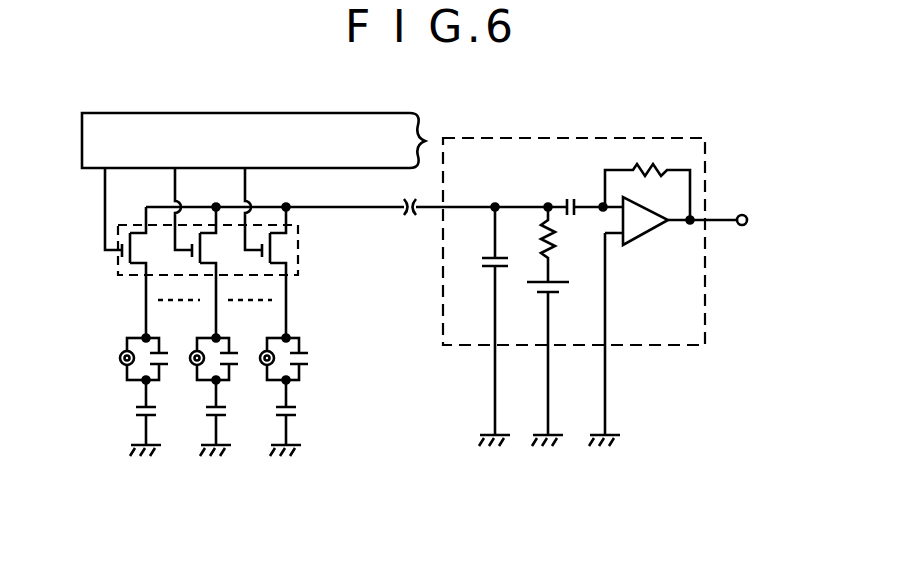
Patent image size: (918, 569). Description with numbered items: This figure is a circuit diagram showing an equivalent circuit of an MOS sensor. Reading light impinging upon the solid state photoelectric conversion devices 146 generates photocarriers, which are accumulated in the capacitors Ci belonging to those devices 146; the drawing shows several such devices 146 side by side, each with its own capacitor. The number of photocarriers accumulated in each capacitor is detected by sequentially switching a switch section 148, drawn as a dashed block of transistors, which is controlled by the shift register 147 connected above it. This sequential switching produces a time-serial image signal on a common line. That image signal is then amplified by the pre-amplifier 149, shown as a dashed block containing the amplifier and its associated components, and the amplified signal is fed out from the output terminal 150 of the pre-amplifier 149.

The solid state photoelectric conversion devices 146 is at (120, 385).
The shift register 147 is at (91, 170).
The switch section 148 is at (118, 266).
The pre-amplifier 149 is at (652, 347).
The output terminal 150 is at (748, 219).